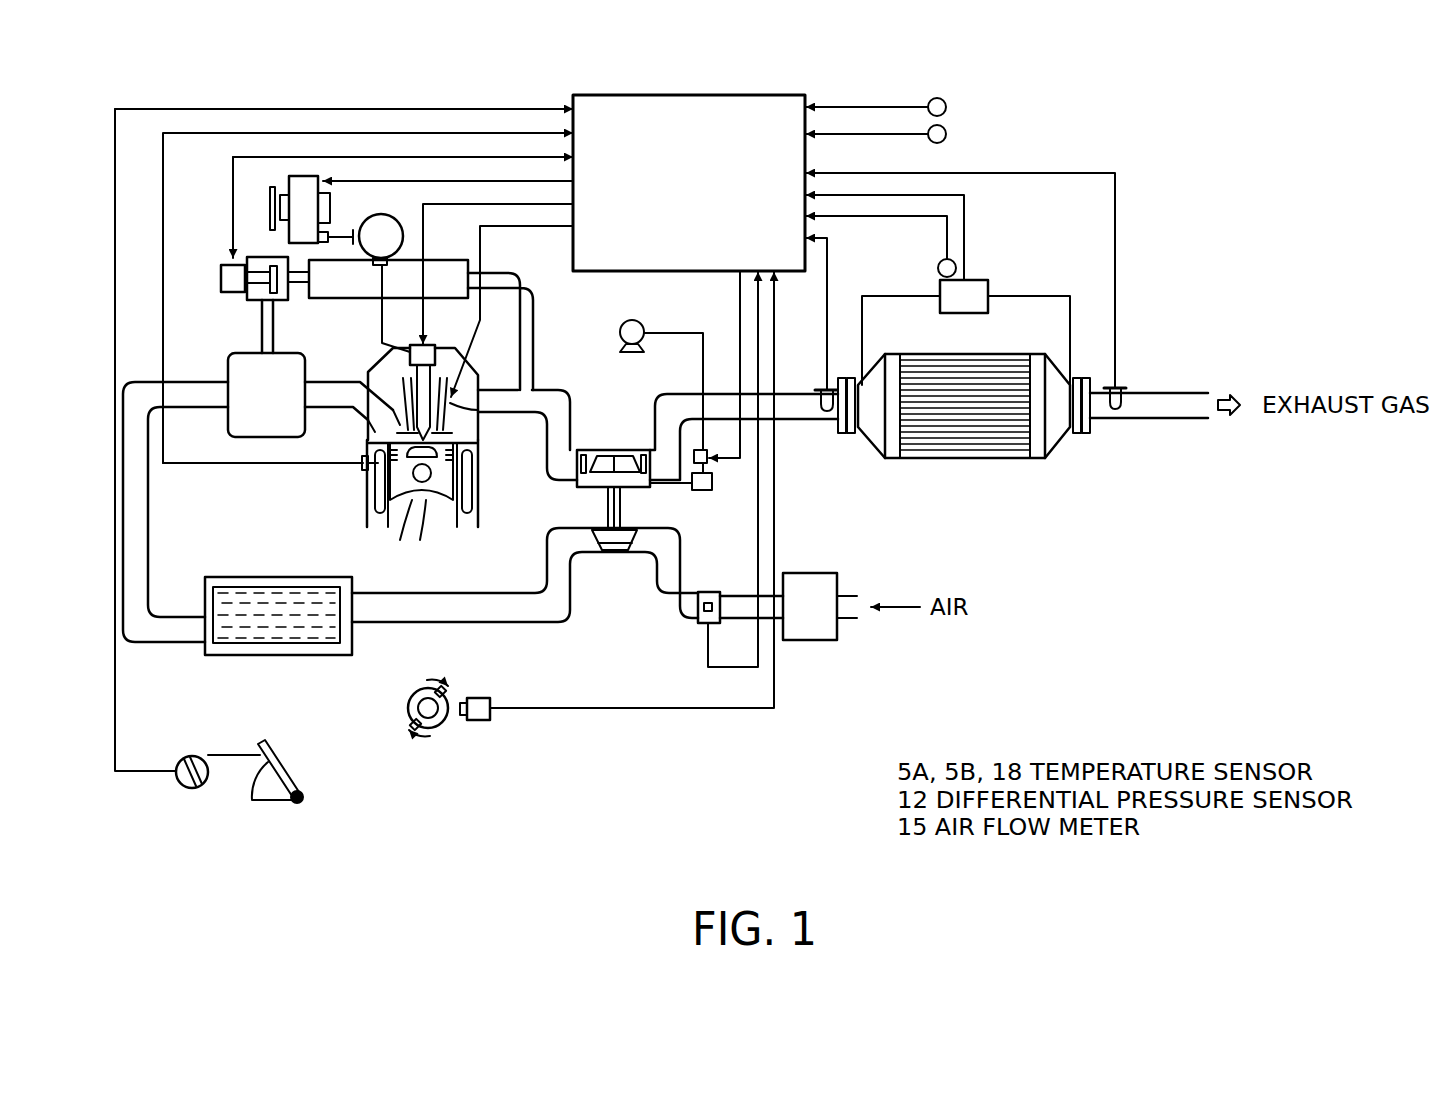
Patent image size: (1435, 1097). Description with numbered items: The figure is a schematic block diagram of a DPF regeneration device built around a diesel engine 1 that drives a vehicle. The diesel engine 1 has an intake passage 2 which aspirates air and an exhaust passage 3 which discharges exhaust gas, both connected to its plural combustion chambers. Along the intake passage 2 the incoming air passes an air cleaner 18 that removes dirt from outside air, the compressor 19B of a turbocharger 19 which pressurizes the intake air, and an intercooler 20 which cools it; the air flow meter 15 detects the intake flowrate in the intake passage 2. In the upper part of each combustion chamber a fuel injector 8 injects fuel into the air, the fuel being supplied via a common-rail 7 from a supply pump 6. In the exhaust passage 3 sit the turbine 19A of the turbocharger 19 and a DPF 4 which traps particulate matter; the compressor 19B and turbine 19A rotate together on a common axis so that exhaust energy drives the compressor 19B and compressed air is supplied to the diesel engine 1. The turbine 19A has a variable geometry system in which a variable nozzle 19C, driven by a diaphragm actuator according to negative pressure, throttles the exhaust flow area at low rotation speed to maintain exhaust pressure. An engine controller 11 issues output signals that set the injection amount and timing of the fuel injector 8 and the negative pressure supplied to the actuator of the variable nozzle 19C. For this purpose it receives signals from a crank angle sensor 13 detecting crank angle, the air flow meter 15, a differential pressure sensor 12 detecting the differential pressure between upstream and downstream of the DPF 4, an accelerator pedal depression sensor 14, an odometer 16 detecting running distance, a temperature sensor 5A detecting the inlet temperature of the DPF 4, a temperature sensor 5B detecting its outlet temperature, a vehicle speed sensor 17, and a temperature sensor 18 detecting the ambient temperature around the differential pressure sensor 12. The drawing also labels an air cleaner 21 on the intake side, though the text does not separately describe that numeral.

The diesel engine 1 is at (443, 419).
The intake passage 2 is at (150, 513).
The exhaust passage 3 is at (556, 388).
The DPF 4 is at (943, 460).
The temperature sensor 5A is at (808, 386).
The temperature sensor 5B is at (1123, 398).
The supply pump 6 is at (304, 176).
The common-rail 7 is at (389, 220).
The fuel injector 8 is at (434, 328).
The engine controller 11 is at (754, 97).
The differential pressure sensor 12 is at (984, 280).
The crank angle sensor 13 is at (473, 727).
The accelerator pedal depression sensor 14 is at (187, 790).
The air flow meter 15 is at (710, 591).
The odometer 16 is at (946, 107).
The vehicle speed sensor 17 is at (946, 134).
The temperature sensor 18 is at (937, 268).
The turbocharger 19 is at (619, 495).
The turbine 19A is at (617, 456).
The compressor 19B is at (611, 552).
The variable nozzle 19C is at (651, 470).
The intercooler 20 is at (353, 635).
The air cleaner 21 is at (824, 573).